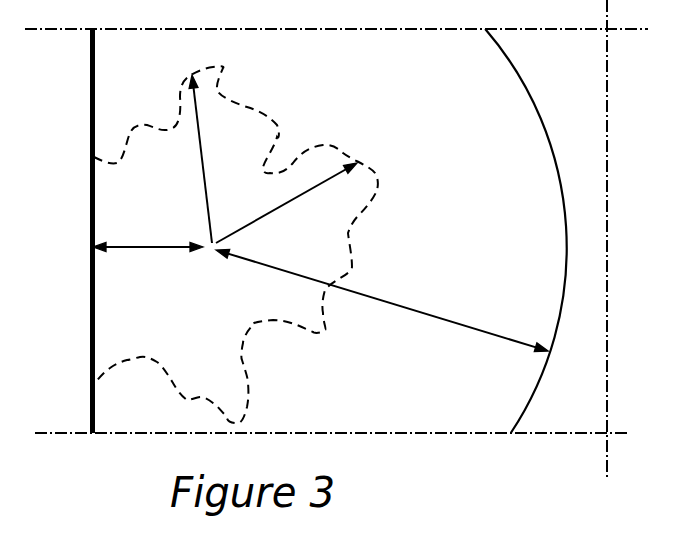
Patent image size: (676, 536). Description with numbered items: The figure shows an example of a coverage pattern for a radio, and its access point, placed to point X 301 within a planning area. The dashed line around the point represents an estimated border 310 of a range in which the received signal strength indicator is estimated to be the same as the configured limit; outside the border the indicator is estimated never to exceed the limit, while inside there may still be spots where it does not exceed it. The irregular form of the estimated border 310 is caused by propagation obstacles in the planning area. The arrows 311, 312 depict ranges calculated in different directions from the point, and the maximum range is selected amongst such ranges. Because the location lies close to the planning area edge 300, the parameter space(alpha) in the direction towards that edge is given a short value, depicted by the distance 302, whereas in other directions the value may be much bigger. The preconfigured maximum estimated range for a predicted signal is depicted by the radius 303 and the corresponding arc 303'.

The planning area edge 300 is at (90, 76).
The point X 301 is at (217, 255).
The space parameter short value 302 is at (125, 245).
The radius 303 is at (382, 301).
The arc 303' is at (536, 231).
The estimated border 310 is at (250, 107).
The arrow 311 is at (227, 168).
The arrow 312 is at (306, 193).